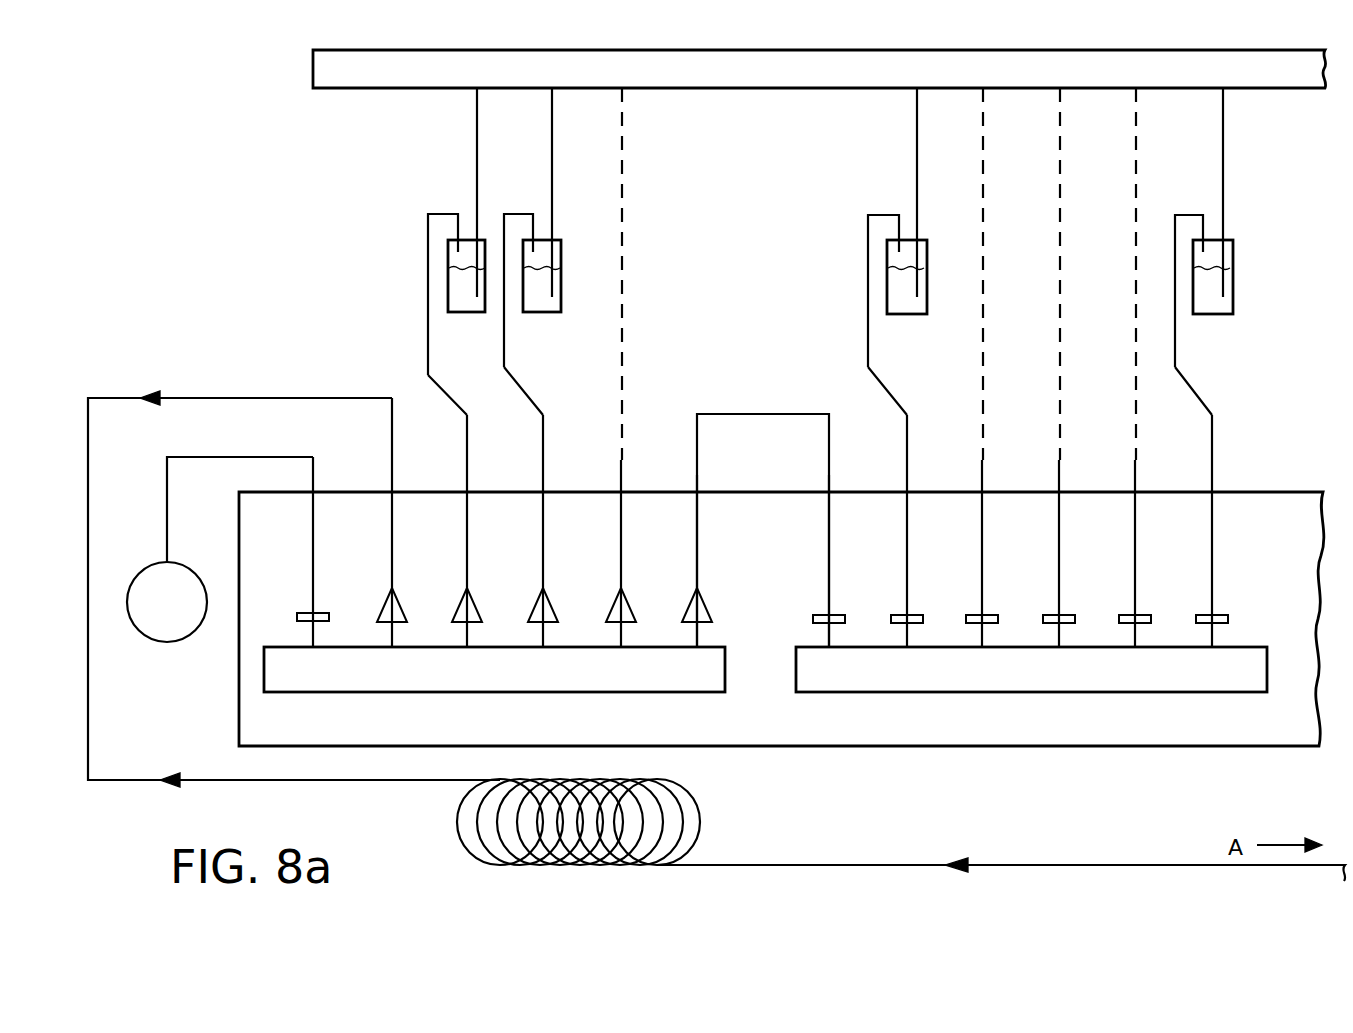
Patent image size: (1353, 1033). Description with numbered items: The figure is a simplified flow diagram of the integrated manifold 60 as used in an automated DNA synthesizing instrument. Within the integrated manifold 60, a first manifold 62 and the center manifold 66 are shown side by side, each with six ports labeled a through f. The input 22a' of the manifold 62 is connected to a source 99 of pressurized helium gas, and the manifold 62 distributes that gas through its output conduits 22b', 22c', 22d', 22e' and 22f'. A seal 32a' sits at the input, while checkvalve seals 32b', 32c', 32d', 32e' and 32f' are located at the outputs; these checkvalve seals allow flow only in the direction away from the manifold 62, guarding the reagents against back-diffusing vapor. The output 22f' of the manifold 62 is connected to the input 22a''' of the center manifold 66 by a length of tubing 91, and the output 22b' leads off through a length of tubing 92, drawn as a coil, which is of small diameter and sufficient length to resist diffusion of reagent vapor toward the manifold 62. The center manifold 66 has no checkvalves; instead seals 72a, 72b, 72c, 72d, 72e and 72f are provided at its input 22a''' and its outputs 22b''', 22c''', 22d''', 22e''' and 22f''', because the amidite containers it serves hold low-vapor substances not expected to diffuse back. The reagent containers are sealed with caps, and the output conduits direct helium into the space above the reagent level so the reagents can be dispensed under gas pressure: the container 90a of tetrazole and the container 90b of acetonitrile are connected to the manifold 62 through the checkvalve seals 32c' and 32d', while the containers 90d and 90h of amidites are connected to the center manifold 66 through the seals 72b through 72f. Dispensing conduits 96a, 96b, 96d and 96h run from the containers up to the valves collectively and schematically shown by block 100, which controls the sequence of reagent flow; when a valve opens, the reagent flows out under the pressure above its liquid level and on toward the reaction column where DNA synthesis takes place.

The block of valves 100 is at (725, 90).
The dispensing conduit 96a is at (477, 167).
The dispensing conduit 96b is at (552, 167).
The dispensing conduit 96d is at (917, 167).
The dispensing conduit 96h is at (1223, 167).
The reagent container 90a is at (466, 313).
The reagent container 90b is at (542, 313).
The reagent container 90d is at (907, 315).
The reagent container 90h is at (1213, 315).
The length of tubing 91 is at (757, 414).
The source of pressurized helium gas 99 is at (167, 643).
The integrated manifold 60 is at (1015, 759).
The manifold 62 is at (383, 693).
The center manifold 66 is at (917, 693).
The input 22a' is at (344, 537).
The output 22b' is at (421, 522).
The inlet line 22c' is at (496, 531).
The inlet line 22d' is at (573, 531).
The inlet line 22e' is at (652, 537).
The output 22f' is at (724, 537).
The input 22a''' is at (863, 537).
The inlet line 22b''' is at (941, 531).
The inlet line 22c''' is at (1015, 537).
The inlet line 22d''' is at (1093, 537).
The inlet line 22e''' is at (1169, 537).
The inlet line 22f''' is at (1243, 531).
The seal 32a' is at (336, 590).
The checkvalve seal 32b' is at (414, 591).
The checkvalve seal 32c' is at (489, 591).
The checkvalve seal 32d' is at (566, 591).
The checkvalve seal 32e' is at (644, 591).
The checkvalve seal 32f' is at (717, 591).
The seal 72a is at (838, 613).
The seal 72b is at (916, 613).
The seal 72c is at (991, 613).
The seal 72d is at (1068, 613).
The seal 72e is at (1144, 613).
The seal 72f is at (1221, 613).
The length of tubing 92 is at (843, 864).